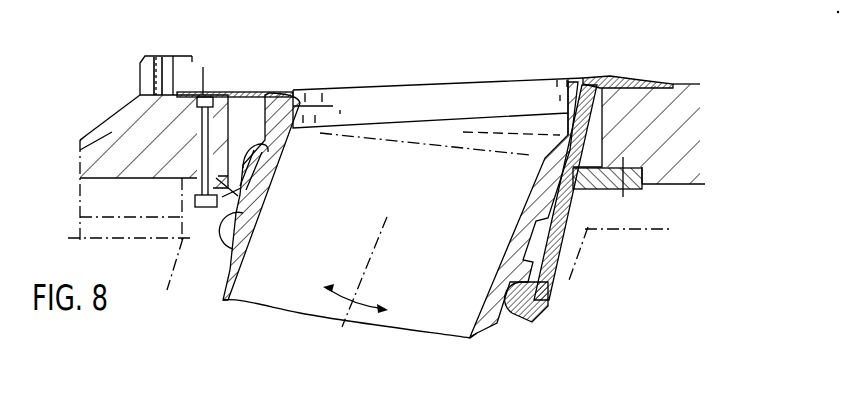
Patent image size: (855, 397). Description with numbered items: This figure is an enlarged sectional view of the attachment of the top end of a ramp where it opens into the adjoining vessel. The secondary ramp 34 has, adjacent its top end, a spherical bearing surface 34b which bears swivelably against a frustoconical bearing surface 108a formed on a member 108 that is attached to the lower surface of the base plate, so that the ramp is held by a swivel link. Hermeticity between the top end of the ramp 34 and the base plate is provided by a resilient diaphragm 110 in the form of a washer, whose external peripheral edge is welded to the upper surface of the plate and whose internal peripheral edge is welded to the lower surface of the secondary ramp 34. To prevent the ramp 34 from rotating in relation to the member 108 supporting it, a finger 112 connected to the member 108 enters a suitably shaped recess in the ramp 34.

The secondary ramp 34 is at (369, 210).
The spherical bearing surface 34b is at (234, 249).
The member 108 is at (567, 232).
The frustoconical bearing surface 108a is at (550, 295).
The resilient diaphragm 110 is at (250, 92).
The finger 112 is at (265, 143).